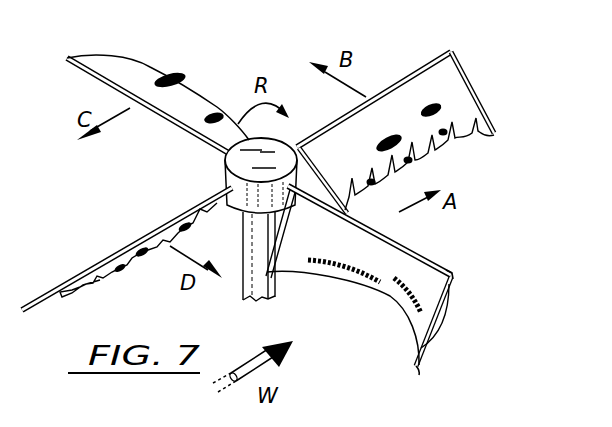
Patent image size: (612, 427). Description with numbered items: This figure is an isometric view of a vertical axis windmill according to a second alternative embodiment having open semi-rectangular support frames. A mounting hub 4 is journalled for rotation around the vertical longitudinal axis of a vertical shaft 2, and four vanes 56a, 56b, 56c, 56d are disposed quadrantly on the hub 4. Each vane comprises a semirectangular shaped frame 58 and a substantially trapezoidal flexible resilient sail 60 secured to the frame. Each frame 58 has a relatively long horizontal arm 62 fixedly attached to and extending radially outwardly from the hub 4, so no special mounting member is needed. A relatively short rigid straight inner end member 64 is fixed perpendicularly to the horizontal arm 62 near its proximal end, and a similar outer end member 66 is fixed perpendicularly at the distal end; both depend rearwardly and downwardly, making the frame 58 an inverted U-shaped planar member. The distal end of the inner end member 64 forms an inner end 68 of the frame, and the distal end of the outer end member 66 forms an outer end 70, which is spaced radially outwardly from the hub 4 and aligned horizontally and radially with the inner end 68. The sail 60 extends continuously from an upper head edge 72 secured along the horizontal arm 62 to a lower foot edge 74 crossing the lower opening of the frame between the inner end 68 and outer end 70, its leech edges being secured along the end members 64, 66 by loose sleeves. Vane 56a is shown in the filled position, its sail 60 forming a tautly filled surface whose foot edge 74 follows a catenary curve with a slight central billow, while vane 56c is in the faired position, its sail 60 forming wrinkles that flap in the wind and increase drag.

The vertical shaft 2 is at (252, 236).
The mounting hub 4 is at (228, 154).
The vane 56a is at (433, 271).
The vane 56b is at (441, 84).
The vane 56c is at (152, 72).
The vane 56d is at (108, 283).
The semirectangular frame 58 is at (422, 264).
The flexible resilient sail 60 is at (390, 284).
The horizontal arm 62 is at (356, 216).
The inner end member 64 is at (280, 252).
The outer end member 66 is at (433, 331).
The inner end 68 is at (250, 297).
The outer end 70 is at (419, 366).
The upper head edge 72 is at (374, 248).
The lower foot edge 74 is at (406, 305).